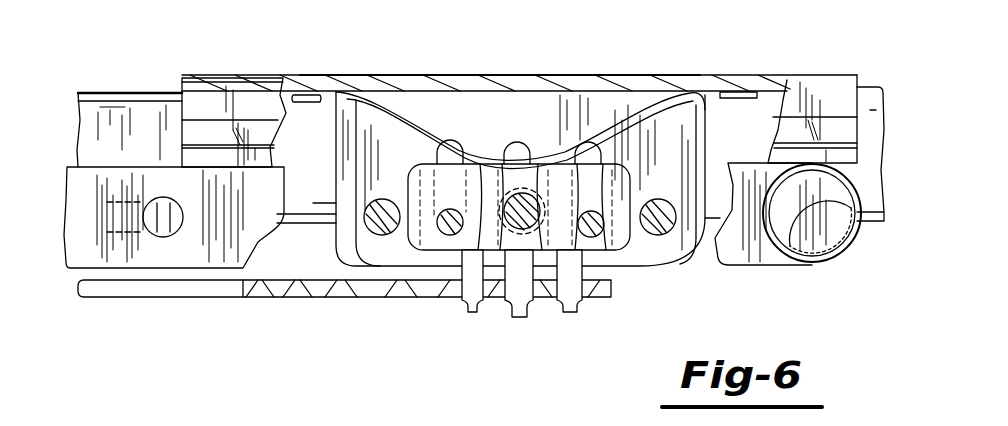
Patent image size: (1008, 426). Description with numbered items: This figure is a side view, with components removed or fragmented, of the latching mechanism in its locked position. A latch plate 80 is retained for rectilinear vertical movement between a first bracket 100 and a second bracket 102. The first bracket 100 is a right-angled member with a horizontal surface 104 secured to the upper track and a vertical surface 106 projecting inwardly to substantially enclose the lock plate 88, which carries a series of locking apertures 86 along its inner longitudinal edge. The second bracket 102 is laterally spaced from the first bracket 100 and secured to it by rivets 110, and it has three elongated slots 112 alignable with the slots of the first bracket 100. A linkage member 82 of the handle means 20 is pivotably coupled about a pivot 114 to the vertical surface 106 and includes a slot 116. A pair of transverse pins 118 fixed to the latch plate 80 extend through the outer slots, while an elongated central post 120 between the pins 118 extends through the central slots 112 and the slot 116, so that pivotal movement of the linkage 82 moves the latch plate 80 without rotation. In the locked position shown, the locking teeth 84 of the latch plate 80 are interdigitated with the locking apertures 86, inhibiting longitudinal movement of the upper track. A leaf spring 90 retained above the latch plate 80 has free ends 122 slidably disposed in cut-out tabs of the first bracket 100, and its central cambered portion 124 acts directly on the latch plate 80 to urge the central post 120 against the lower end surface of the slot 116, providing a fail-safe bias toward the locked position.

The handle means 20 is at (73, 245).
The latch plate 80 is at (634, 182).
The linkage member 82 is at (747, 253).
The locking teeth 84 is at (568, 313).
The locking apertures 86 is at (328, 283).
The lock plate 88 is at (192, 290).
The leaf spring 90 is at (680, 88).
The first bracket 100 is at (446, 72).
The second bracket 102 is at (657, 280).
The horizontal surface 104 is at (525, 80).
The vertical surface 106 is at (186, 134).
The rivets 110 is at (378, 222).
The elongated slots 112 is at (590, 147).
The pivot 114 is at (823, 233).
The slot 116 is at (517, 195).
The transverse pins 118 is at (448, 232).
The central post 120 is at (520, 207).
The free ends 122 is at (300, 93).
The central cambered portion 124 is at (548, 158).